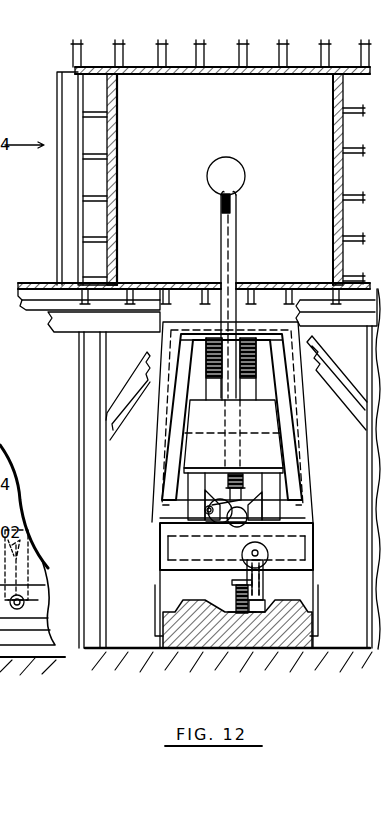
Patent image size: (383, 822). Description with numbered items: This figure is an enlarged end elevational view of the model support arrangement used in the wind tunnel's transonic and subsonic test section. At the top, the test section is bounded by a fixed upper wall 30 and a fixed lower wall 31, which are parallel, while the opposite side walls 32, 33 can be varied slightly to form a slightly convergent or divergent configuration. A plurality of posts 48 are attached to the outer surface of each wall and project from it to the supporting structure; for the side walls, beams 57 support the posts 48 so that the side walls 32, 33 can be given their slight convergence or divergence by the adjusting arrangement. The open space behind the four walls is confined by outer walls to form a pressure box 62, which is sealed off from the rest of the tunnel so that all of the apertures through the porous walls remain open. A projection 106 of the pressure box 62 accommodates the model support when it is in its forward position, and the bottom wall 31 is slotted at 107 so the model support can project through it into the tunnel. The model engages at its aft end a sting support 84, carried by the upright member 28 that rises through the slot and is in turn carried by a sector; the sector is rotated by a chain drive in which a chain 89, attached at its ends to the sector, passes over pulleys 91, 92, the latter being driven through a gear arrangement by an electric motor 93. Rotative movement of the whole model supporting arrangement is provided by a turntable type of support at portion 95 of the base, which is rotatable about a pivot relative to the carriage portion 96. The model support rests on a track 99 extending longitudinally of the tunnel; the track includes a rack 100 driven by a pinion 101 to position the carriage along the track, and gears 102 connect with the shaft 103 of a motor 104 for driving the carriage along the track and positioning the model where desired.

The column 28 is at (238, 216).
The upper wall 30 is at (255, 75).
The lower wall 31 is at (142, 283).
The side wall 32 is at (333, 121).
The side wall 33 is at (118, 126).
The posts 48 is at (100, 198).
The beams 57 is at (70, 96).
The pressure box 62 is at (110, 462).
The sting support 84 is at (212, 163).
The chain 89 is at (221, 200).
The pulley 91 is at (243, 466).
The pulley 92 is at (212, 483).
The electric motor 93 is at (214, 520).
The turntable portion 95 is at (172, 553).
The carriage portion 96 is at (172, 593).
The track 99 is at (232, 650).
The rack 100 is at (232, 612).
The pinion 101 is at (237, 591).
The gears 102 is at (264, 602).
The shaft 103 is at (22, 580).
The motor 104 is at (268, 553).
The projection 106 is at (178, 416).
The slot 107 is at (240, 285).